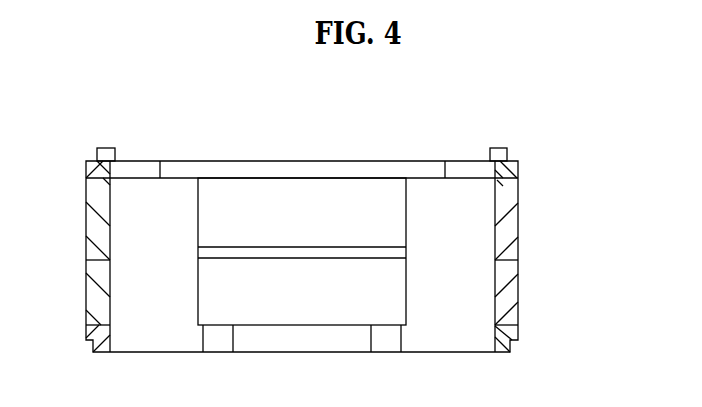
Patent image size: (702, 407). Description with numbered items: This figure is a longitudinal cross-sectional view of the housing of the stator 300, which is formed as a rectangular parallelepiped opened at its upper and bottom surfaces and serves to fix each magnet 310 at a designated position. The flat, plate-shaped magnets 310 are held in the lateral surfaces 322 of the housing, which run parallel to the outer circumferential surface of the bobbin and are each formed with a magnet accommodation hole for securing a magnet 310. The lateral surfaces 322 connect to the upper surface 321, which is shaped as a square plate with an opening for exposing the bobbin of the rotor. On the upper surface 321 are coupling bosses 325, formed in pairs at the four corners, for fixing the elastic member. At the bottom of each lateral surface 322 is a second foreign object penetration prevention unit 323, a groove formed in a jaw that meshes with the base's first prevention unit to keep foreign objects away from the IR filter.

The stator 300 is at (350, 241).
The magnet 310 is at (518, 262).
The upper surface 321 is at (463, 161).
The lateral surface 322 is at (519, 166).
The second foreign object penetration prevention unit 323 is at (92, 346).
The coupling boss 325 is at (505, 149).